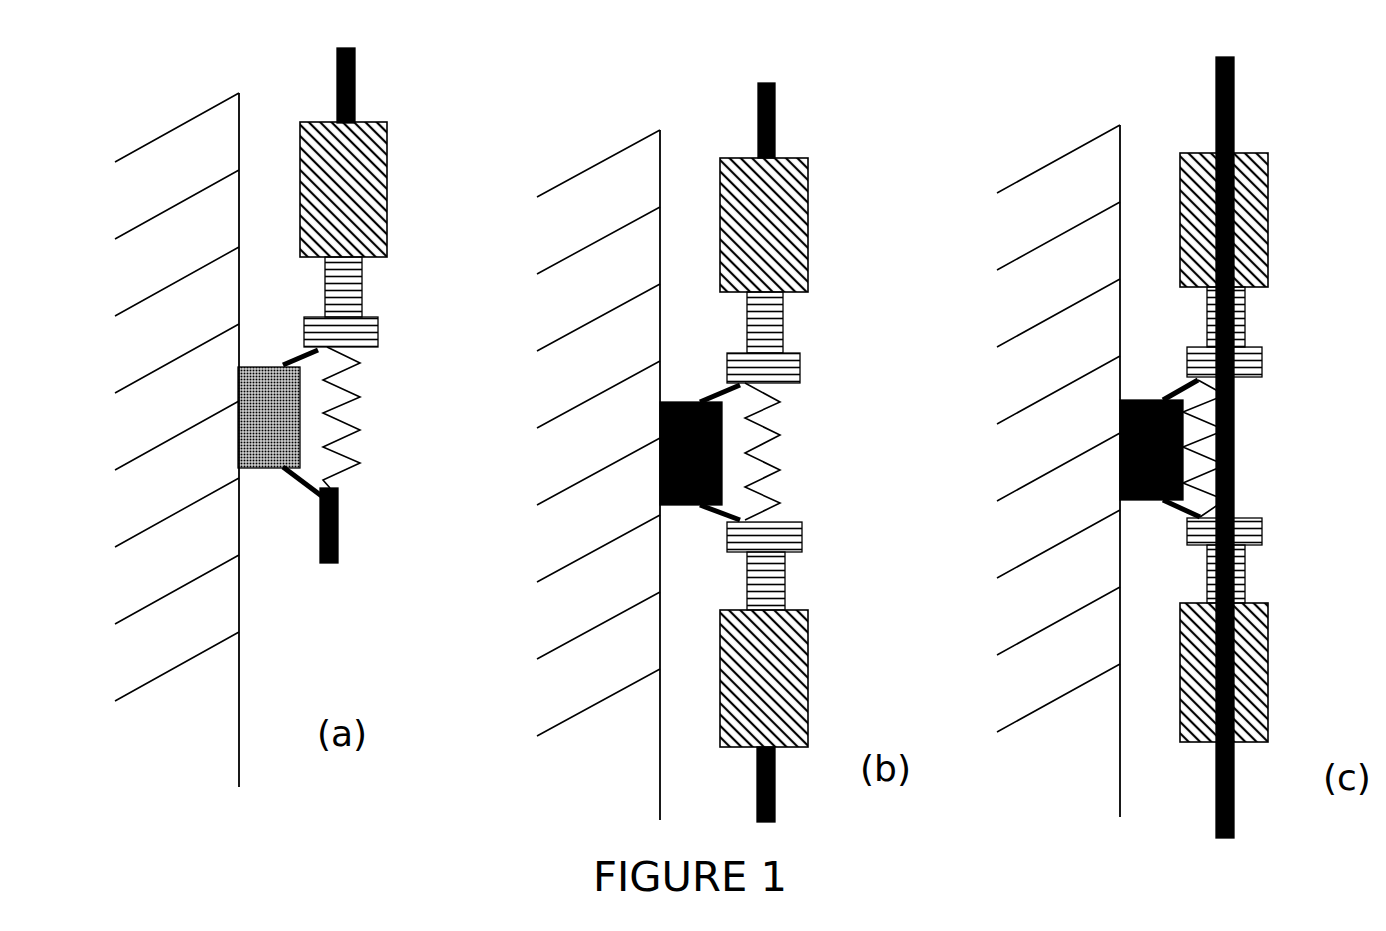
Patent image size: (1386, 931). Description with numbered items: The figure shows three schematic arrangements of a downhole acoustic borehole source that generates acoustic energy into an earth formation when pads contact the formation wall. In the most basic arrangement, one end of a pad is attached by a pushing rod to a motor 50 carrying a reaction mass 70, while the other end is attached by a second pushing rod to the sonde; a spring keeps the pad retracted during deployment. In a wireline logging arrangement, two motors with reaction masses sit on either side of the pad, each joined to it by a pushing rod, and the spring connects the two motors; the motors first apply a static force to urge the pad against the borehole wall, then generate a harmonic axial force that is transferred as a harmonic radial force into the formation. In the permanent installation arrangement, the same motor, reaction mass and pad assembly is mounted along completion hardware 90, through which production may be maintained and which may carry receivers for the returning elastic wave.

The motor 50 is at (378, 316).
The reaction mass 70 is at (385, 211).
The completion hardware 90 is at (1235, 116).